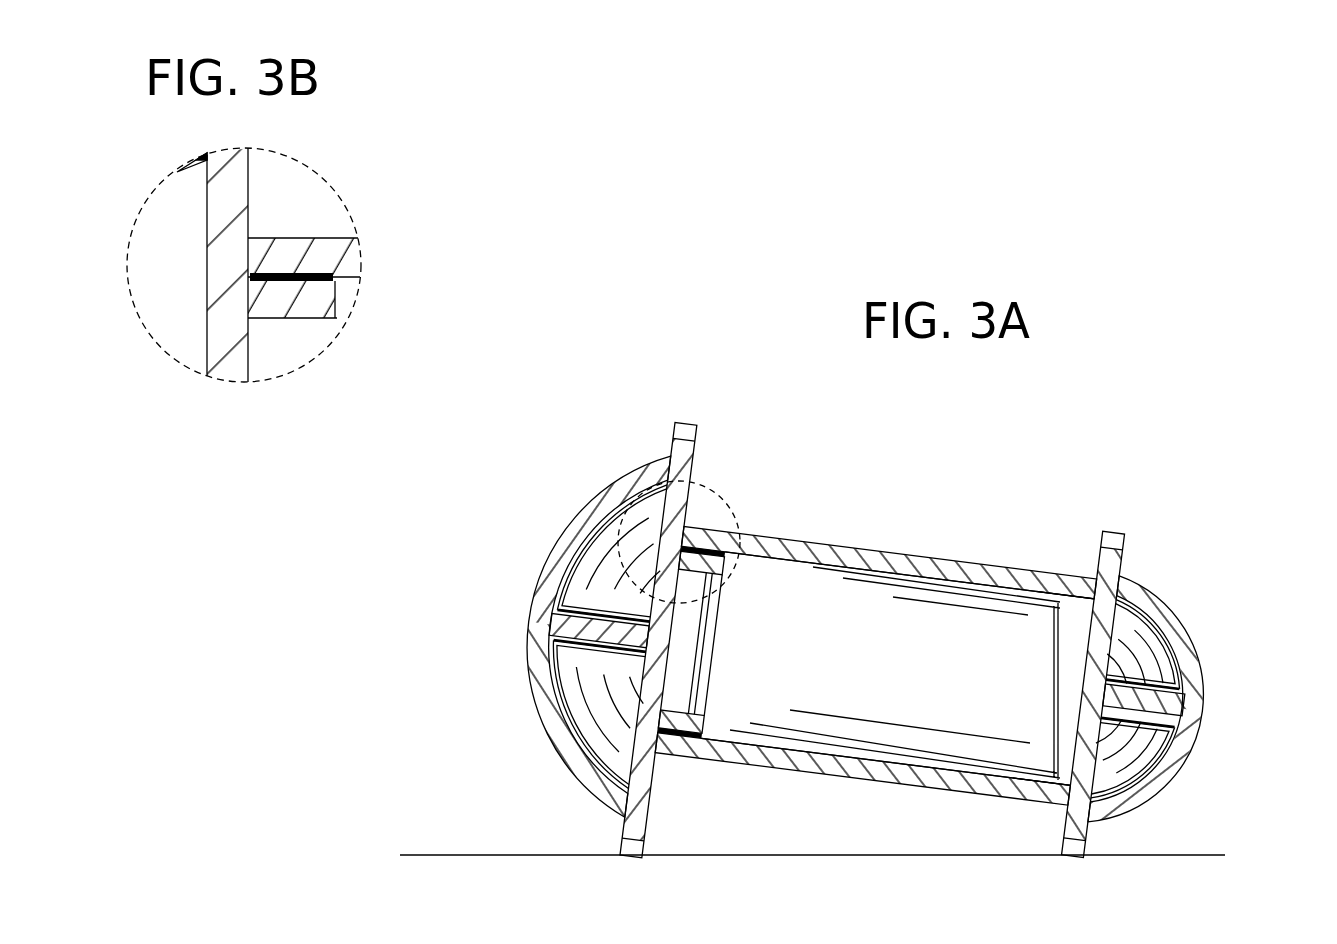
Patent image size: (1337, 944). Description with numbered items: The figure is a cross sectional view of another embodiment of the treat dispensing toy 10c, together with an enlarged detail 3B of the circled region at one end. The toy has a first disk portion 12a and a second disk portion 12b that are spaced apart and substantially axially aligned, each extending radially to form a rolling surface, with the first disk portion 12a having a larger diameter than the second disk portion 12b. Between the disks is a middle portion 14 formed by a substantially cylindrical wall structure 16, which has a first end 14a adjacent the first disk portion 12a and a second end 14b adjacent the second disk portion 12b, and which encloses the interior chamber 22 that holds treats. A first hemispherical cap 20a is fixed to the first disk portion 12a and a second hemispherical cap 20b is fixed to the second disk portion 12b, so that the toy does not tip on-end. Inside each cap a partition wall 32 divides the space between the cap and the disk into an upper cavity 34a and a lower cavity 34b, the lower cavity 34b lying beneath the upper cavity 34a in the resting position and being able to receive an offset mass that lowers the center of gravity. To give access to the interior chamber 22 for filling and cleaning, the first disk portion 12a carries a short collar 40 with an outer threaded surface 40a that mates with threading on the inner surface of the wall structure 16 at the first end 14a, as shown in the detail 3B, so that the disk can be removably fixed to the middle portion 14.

In FIG. 3A, the treat dispensing toy 10c is at (1080, 411).
In FIG. 3B, the first disk portion 12a is at (221, 195).
In FIG. 3A, the first disk portion 12a is at (684, 466).
In FIG. 3A, the second disk portion 12b is at (1119, 560).
In FIG. 3A, the middle portion 14 is at (887, 642).
In FIG. 3A, the first end 14a is at (743, 700).
In FIG. 3A, the second end 14b is at (1053, 672).
In FIG. 3B, the cylindrical wall structure 16 is at (304, 257).
In FIG. 3A, the cylindrical wall structure 16 is at (792, 546).
In FIG. 3A, the first hemispherical cap 20a is at (587, 502).
In FIG. 3A, the second hemispherical cap 20b is at (1172, 633).
In FIG. 3A, the interior chamber 22 is at (882, 632).
In FIG. 3A, the partition wall 32 is at (548, 624).
In FIG. 3A, the upper cavity 34a is at (603, 567).
In FIG. 3A, the lower cavity 34b is at (585, 688).
In FIG. 3B, the short collar 40 is at (318, 312).
In FIG. 3A, the short collar 40 is at (688, 690).
In FIG. 3B, the outer threaded surface 40a is at (297, 272).
In FIG. 3A, the detail region of FIG. 3B is at (745, 478).